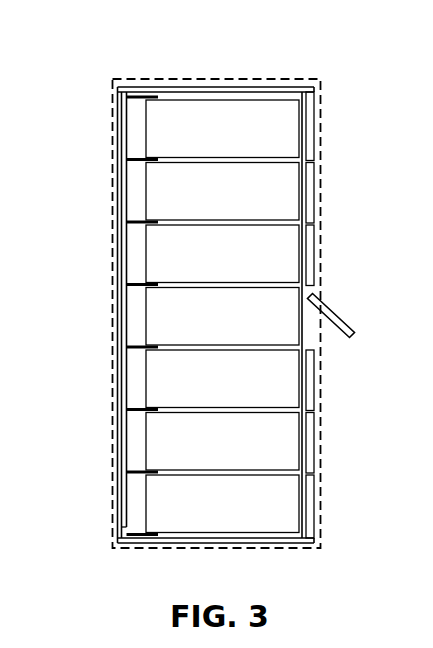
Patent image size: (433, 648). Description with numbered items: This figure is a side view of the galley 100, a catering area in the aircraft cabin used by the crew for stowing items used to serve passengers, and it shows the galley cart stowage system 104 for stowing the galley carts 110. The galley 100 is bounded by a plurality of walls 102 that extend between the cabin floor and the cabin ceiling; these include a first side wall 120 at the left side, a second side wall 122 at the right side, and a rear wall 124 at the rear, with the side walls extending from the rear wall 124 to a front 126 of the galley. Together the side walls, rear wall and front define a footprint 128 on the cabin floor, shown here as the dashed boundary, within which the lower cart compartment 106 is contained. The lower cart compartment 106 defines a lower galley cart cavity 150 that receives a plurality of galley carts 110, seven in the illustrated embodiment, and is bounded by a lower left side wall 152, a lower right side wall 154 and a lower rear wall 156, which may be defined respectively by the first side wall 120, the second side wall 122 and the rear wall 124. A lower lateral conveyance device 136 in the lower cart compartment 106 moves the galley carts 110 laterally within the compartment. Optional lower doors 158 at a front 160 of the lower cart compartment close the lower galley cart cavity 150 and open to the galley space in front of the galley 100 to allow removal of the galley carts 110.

The galley 100 is at (217, 44).
The walls 102 is at (287, 90).
The galley cart stowage system 104 is at (103, 370).
The lower cart compartment 106 is at (306, 157).
The galley carts 110 is at (307, 252).
The first side wall 120 is at (158, 547).
The second side wall 122 is at (193, 85).
The rear wall 124 is at (117, 130).
The front 126 is at (318, 90).
The footprint 128 is at (106, 549).
The lower lateral conveyance device 136 is at (134, 90).
The lower galley cart cavity 150 is at (114, 248).
The lower left side wall 152 is at (252, 538).
The lower right side wall 154 is at (237, 90).
The lower rear wall 156 is at (127, 473).
The lower doors 158 is at (332, 305).
The front 160 is at (318, 537).